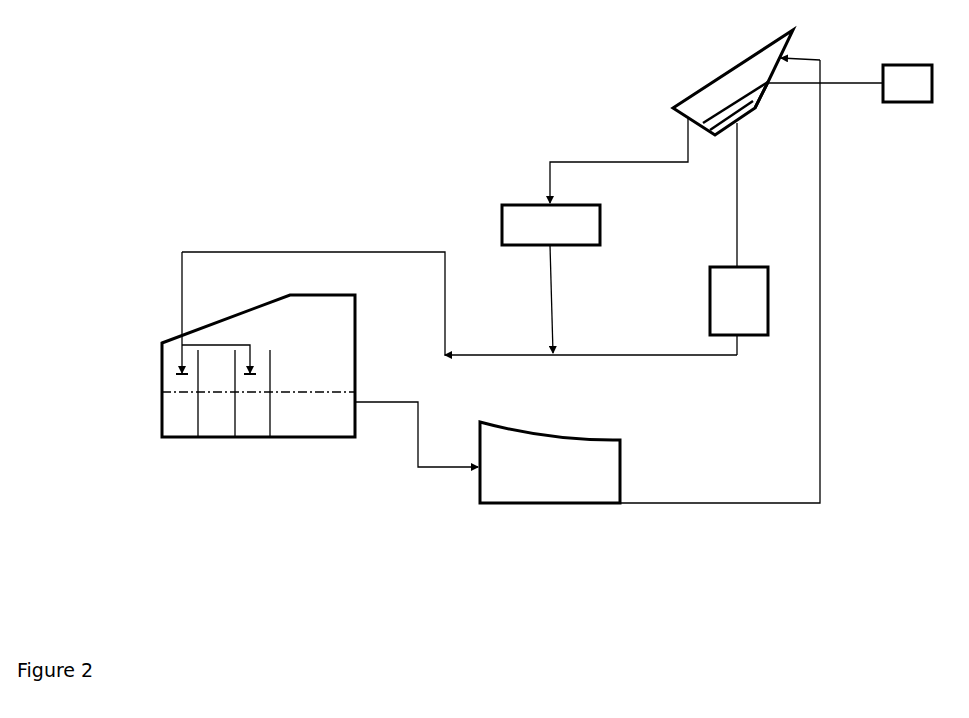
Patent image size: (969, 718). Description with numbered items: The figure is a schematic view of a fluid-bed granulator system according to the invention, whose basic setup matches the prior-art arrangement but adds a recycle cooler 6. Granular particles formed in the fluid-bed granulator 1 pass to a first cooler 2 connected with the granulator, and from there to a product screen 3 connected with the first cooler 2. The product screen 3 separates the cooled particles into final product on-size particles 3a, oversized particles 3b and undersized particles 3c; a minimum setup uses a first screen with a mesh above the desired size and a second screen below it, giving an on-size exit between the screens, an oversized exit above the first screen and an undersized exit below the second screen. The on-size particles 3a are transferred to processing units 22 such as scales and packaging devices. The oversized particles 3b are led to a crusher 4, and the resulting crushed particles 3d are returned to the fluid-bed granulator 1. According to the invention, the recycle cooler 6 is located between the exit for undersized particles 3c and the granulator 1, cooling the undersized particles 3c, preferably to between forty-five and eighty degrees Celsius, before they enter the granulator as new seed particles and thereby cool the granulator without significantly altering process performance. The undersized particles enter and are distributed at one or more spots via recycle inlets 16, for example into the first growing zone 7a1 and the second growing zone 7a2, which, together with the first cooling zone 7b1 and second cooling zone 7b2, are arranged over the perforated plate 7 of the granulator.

The fluid-bed granulator 1 is at (168, 325).
The first cooler 2 is at (608, 433).
The product screen 3 is at (688, 83).
The final product on-size particles 3a is at (770, 87).
The oversized particles 3b is at (685, 118).
The undersized particles 3c is at (743, 125).
The crushed particles 3d is at (535, 299).
The crusher 4 is at (512, 195).
The recycle cooler 6 is at (708, 300).
The perforated plate 7 is at (162, 400).
The first growing zone 7a1 is at (175, 377).
The second growing zone 7a2 is at (257, 371).
The first cooling zone 7b1 is at (228, 370).
The second cooling zone 7b2 is at (322, 372).
The recycle inlet 16 is at (217, 382).
The processing units 22 is at (907, 110).